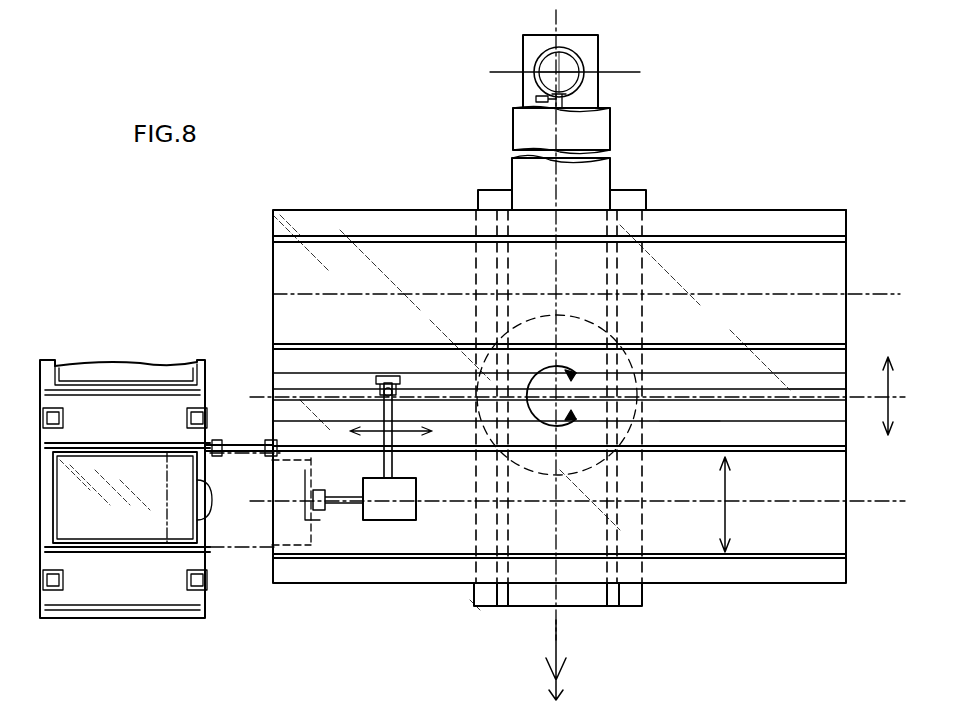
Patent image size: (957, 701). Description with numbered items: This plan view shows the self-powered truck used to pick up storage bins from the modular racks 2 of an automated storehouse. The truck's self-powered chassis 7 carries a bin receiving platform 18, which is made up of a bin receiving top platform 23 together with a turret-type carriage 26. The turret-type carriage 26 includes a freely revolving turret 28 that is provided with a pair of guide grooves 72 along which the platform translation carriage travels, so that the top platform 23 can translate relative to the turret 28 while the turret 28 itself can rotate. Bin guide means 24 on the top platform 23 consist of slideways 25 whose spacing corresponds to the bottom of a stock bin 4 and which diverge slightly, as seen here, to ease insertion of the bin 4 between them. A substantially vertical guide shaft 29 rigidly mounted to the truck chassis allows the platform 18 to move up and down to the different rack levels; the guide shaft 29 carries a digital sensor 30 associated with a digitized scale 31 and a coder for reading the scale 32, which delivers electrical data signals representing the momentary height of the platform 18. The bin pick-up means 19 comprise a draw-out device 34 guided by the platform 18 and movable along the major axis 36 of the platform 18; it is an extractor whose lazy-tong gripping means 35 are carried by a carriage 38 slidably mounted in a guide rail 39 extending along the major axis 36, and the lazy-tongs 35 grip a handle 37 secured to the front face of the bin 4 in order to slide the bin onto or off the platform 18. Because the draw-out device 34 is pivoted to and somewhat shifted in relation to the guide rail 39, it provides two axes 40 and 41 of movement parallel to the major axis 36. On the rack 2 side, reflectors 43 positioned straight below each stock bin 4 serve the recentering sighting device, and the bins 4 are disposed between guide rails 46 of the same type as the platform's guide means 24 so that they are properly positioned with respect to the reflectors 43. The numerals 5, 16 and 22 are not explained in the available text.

The modular rack 2 is at (92, 356).
The unitary storage bin 4 is at (60, 505).
The machine 5 is at (466, 142).
The self-powered chassis 7 is at (592, 86).
The feed direction arrow 16 is at (565, 664).
The bin receiving platform 18 is at (467, 199).
The bin pick-up means 19 is at (388, 368).
The vertical adjustment arrow 22 is at (893, 382).
The bin receiving top platform 23 is at (283, 258).
The bin guide means 24 is at (727, 500).
The slideways 25 is at (752, 240).
The turret-type carriage 26 is at (612, 323).
The turret 28 is at (688, 210).
The guide shaft 29 is at (578, 60).
The digital sensor 30 is at (536, 99).
The digitized scale 31 is at (568, 97).
The coder for reading the scale 32 is at (570, 117).
The draw-out device 34 is at (416, 520).
The lazy-tong gripping means 35 is at (325, 495).
The major axis 36 is at (795, 393).
The handle 37 is at (318, 515).
The carriage 38 is at (376, 385).
The guide rail 39 is at (688, 420).
The axis of movement 40 is at (878, 293).
The axis of movement 41 is at (858, 503).
The reflectors 43 is at (215, 443).
The guide rails 46 is at (150, 443).
The guide grooves 72 is at (628, 200).